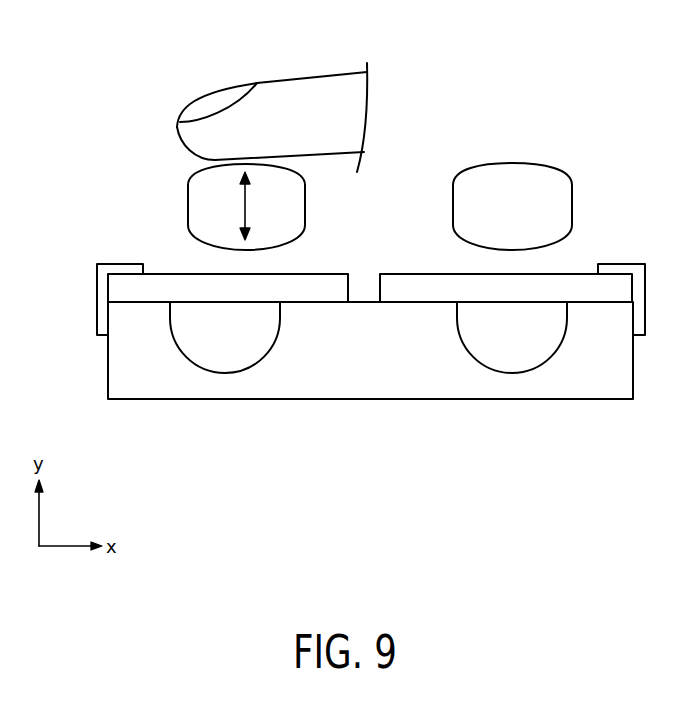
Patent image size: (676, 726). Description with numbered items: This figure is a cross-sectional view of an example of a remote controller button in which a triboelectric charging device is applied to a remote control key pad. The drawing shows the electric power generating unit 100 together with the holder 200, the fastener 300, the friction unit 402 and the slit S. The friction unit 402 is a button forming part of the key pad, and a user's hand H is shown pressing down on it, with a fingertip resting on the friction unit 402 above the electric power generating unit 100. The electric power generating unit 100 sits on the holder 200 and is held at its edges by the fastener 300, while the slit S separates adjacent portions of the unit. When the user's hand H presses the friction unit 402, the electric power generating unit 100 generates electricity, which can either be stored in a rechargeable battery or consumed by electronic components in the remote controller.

The electric power generating unit 100 is at (283, 287).
The holder 200 is at (123, 372).
The fastener 300 is at (103, 288).
The friction unit 402 is at (200, 206).
The user's hand H is at (323, 88).
The slit S is at (366, 262).